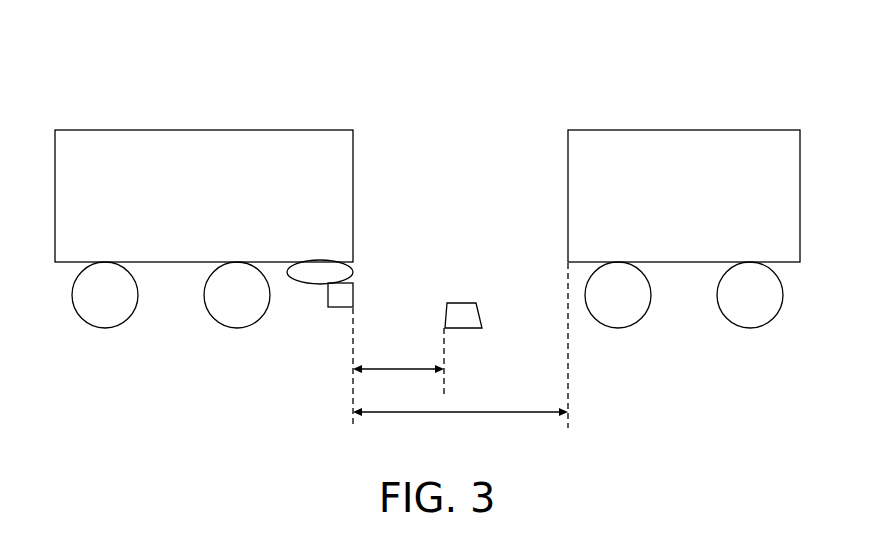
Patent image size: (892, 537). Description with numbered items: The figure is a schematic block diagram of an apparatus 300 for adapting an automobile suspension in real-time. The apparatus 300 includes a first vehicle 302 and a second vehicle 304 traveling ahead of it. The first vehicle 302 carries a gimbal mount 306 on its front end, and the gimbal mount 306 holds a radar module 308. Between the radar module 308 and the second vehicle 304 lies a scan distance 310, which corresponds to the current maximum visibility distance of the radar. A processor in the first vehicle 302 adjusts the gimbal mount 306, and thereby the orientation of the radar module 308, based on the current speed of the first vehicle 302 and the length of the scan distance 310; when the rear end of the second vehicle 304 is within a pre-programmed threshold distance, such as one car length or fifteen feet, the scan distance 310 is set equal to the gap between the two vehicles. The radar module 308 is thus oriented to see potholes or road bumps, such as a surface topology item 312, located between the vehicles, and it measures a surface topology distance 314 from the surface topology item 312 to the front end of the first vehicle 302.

The apparatus 300 is at (82, 70).
The first vehicle 302 is at (189, 220).
The second vehicle 304 is at (669, 220).
The gimbal mount 306 is at (304, 284).
The radar module 308 is at (333, 308).
The scan distance 310 is at (520, 412).
The surface topology item 312 is at (463, 303).
The surface topology distance 314 is at (406, 369).